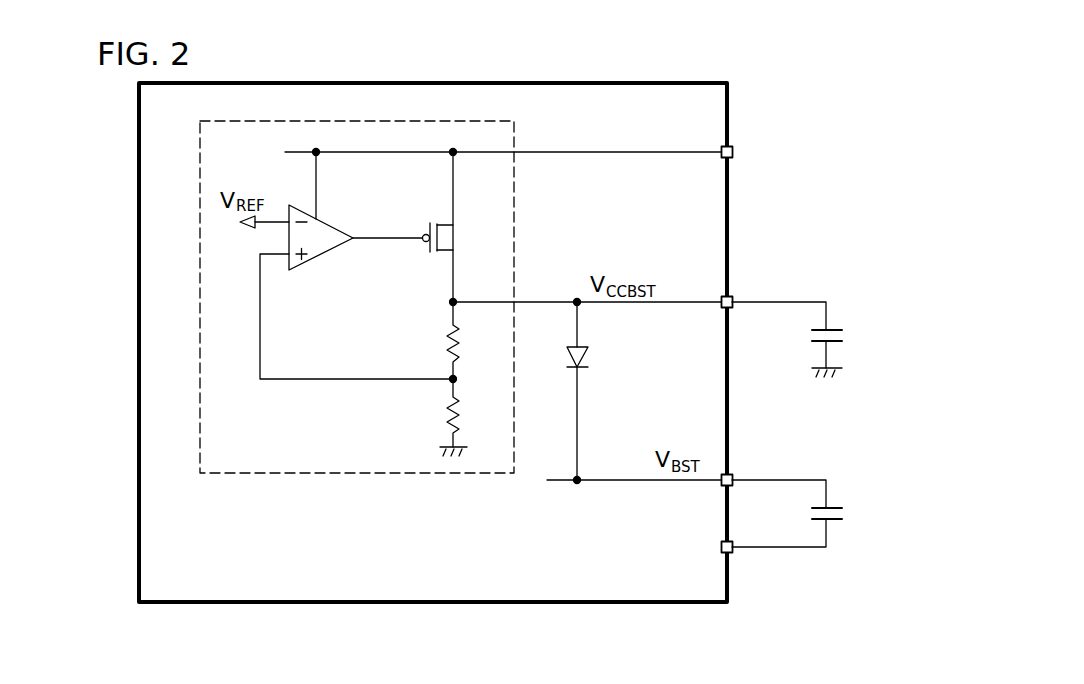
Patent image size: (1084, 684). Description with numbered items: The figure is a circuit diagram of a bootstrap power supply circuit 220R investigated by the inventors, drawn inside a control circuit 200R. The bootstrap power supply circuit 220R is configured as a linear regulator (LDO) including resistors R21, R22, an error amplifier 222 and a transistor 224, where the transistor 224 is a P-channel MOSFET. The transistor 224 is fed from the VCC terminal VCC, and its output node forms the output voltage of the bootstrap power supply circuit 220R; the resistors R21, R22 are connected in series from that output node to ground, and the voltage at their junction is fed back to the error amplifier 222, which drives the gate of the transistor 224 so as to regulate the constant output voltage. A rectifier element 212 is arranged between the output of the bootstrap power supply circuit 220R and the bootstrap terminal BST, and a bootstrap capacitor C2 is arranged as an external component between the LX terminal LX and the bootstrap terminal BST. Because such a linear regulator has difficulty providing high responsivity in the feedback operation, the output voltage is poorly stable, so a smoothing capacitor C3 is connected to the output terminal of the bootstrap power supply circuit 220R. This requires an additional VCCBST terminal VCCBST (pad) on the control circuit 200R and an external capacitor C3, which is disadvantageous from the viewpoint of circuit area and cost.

The control circuit 200R is at (380, 603).
The bootstrap power supply circuit 220R is at (323, 475).
The error amplifier 222 is at (323, 257).
The transistor 224 is at (433, 217).
The resistor R21 is at (446, 341).
The resistor R22 is at (446, 413).
The rectifier element 212 is at (592, 359).
The smoothing capacitor C3 is at (848, 336).
The bootstrap capacitor C2 is at (848, 513).
The VCC terminal VCC is at (735, 145).
The VCCBST terminal VCCBST is at (737, 295).
The bootstrap terminal BST is at (758, 453).
The LX terminal LX is at (733, 552).